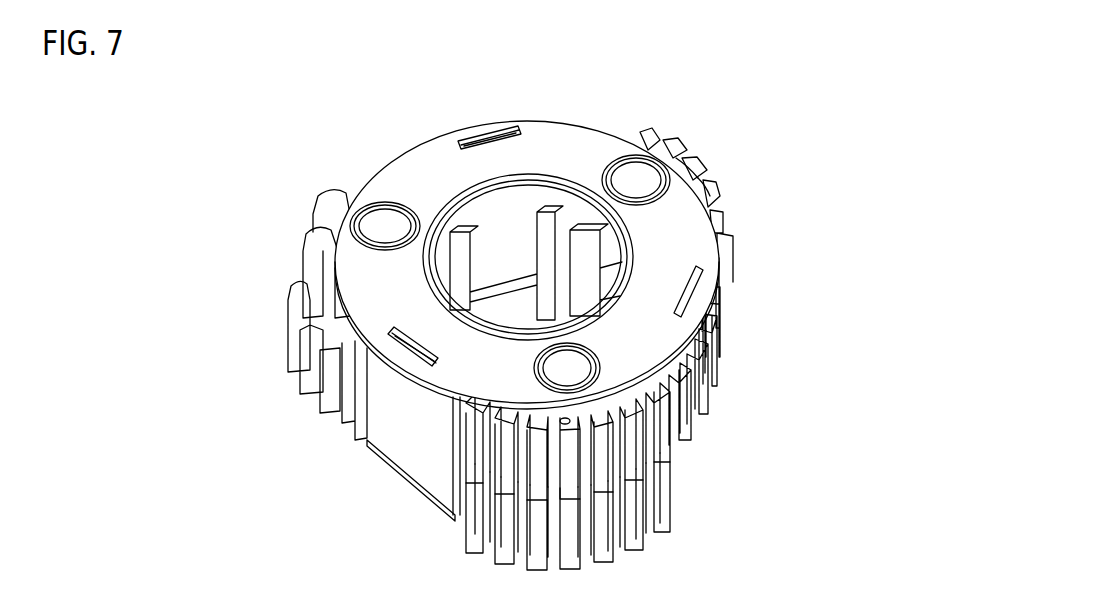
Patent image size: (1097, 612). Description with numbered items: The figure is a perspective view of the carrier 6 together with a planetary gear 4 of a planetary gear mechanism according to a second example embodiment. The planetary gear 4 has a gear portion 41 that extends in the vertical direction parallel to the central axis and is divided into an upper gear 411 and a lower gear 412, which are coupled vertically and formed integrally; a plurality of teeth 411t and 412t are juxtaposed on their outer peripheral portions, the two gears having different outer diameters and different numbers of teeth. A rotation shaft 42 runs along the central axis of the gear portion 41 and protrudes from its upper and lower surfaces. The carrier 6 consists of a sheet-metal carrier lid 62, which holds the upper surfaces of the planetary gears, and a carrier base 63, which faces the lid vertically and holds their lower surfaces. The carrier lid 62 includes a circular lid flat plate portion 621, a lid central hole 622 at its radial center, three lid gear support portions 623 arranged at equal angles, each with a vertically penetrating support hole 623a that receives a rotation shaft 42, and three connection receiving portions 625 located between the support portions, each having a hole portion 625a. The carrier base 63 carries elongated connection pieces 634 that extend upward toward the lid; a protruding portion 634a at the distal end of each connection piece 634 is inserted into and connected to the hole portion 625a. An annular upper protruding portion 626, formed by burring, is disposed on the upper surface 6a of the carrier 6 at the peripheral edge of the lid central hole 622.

The planetary gear 4 is at (485, 330).
The gear portion 41 is at (488, 352).
The upper gear 411 is at (297, 250).
The teeth 411t is at (313, 223).
The lower gear 412 is at (285, 302).
The teeth 412t is at (290, 333).
The rotation shaft 42 is at (640, 187).
The carrier 6 is at (550, 320).
The upper surface 6a is at (440, 150).
The carrier lid 62 is at (559, 229).
The lid flat plate portion 621 is at (703, 255).
The lid central hole 622 is at (585, 195).
The lid gear support portion 623 is at (690, 150).
The support hole 623a is at (697, 182).
The connection receiving portion 625 is at (502, 128).
The hole portion 625a is at (482, 138).
The upper protruding portion 626 is at (620, 287).
The carrier base 63 is at (436, 336).
The connection piece 634 is at (410, 453).
The protruding portion 634a is at (527, 133).